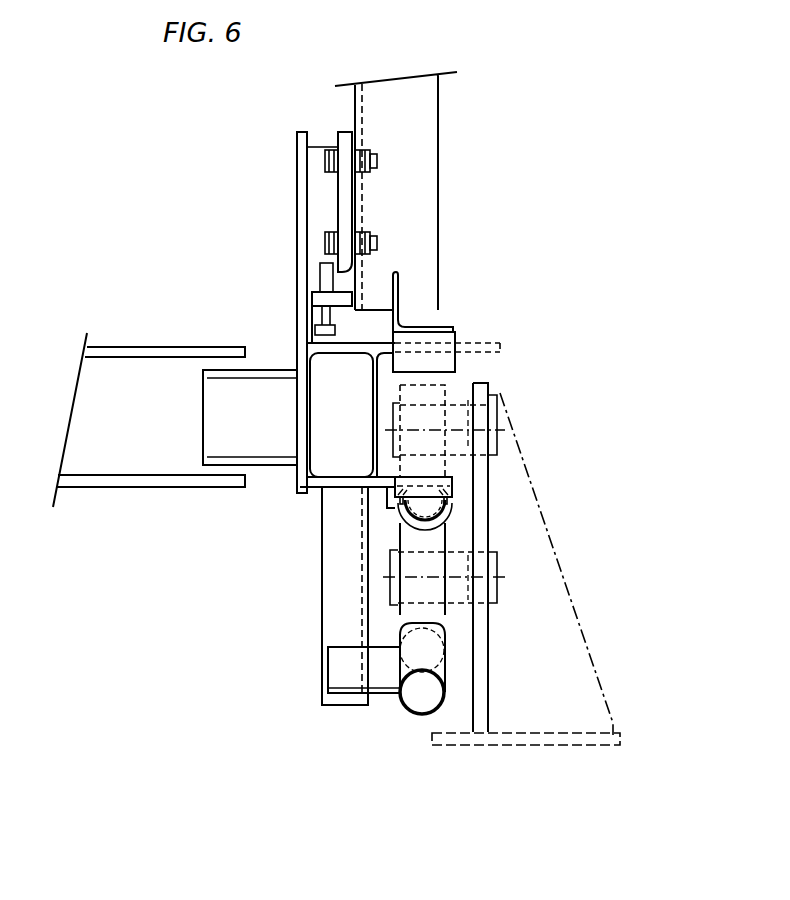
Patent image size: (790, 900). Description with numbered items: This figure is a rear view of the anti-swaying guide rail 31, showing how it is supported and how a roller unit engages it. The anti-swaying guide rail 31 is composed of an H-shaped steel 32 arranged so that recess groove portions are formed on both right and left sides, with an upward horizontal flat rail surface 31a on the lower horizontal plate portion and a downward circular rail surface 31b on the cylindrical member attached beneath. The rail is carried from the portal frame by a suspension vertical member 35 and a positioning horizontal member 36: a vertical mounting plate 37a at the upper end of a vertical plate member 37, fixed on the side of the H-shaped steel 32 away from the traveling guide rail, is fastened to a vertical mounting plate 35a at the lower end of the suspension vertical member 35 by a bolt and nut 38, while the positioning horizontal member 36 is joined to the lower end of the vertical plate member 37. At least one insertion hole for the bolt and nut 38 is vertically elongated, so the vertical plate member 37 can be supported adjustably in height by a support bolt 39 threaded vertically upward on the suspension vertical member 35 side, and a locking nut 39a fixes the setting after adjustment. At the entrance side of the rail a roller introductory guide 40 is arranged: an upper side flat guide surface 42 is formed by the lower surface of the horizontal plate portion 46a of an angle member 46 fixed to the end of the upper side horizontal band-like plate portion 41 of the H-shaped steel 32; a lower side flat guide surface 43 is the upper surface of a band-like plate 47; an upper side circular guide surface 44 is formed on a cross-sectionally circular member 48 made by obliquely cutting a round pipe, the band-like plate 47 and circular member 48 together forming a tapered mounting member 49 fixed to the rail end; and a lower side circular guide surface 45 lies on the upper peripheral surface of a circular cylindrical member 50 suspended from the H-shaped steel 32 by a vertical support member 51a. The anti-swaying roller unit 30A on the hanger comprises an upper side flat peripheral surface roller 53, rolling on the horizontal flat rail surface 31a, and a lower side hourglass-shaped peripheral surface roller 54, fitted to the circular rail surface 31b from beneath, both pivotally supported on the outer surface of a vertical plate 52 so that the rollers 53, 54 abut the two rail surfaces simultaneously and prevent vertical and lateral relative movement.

The anti-swaying roller unit 30A is at (560, 613).
The anti-swaying guide rail 31 is at (305, 440).
The horizontal flat rail surface 31a is at (422, 477).
The circular rail surface 31b is at (415, 540).
The H-shaped steel 32 is at (320, 340).
The suspension vertical member 35 is at (418, 118).
The vertical mounting plate 35a is at (352, 212).
The positioning horizontal member 36 is at (113, 378).
The vertical plate member 37 is at (300, 213).
The vertical mounting plate 37a is at (345, 200).
The bolt and nut 38 is at (377, 163).
The support bolt 39 is at (325, 276).
The locking nut 39a is at (320, 318).
The roller introductory guide 40 is at (480, 329).
The upper side horizontal band-like plate portion 41 is at (460, 352).
The upper side flat guide surface 42 is at (432, 362).
The lower side flat guide surface 43 is at (440, 470).
The upper side circular guide surface 44 is at (400, 523).
The lower side circular guide surface 45 is at (420, 655).
The angle member 46 is at (398, 296).
The horizontal plate portion 46a is at (460, 330).
The band-like plate 47 is at (450, 490).
The cross-sectionally circular member 48 is at (440, 515).
The mounting member 49 is at (449, 504).
The circular cylindrical member 50 is at (447, 667).
The vertical support member 51a is at (335, 578).
The vertical plate 52 is at (480, 705).
The upper side flat peripheral surface roller 53 is at (430, 413).
The lower side hourglass-shaped peripheral surface roller 54 is at (455, 572).